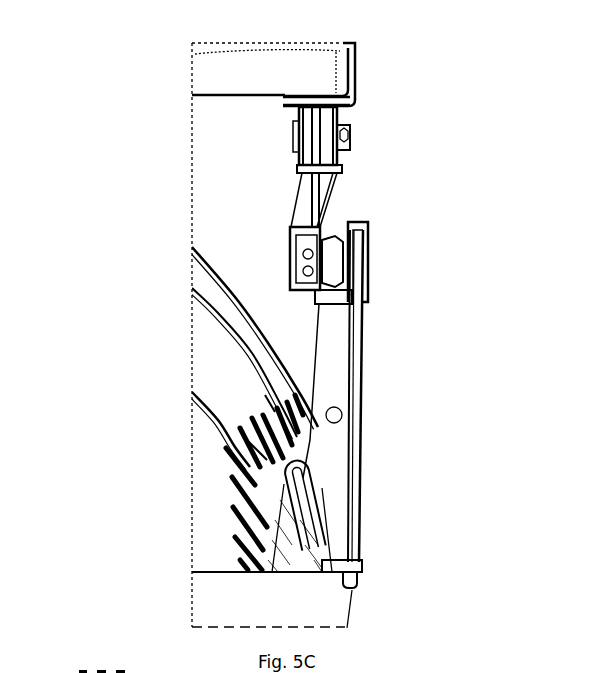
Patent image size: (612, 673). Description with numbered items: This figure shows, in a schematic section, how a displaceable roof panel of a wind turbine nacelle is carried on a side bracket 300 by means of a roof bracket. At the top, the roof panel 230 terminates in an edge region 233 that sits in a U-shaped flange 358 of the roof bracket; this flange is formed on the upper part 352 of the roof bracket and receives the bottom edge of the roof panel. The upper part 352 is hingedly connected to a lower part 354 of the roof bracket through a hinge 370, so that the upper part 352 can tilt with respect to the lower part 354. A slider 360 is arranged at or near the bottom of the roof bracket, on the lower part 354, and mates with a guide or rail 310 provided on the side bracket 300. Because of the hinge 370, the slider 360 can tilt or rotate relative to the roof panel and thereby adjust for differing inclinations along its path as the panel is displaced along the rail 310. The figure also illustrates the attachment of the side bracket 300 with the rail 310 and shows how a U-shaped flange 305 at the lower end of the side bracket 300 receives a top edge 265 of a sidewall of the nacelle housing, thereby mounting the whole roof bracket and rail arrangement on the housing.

The housing body 230 is at (213, 62).
The housing flange 233 is at (358, 75).
The U-shaped flange 358 is at (360, 88).
The hinge 370 is at (295, 140).
The upper part 352 is at (360, 117).
The lower part 354 is at (290, 245).
The slider 360 is at (345, 265).
The rail 310 is at (352, 277).
The side bracket 300 is at (345, 430).
The U-shaped flange 305 is at (305, 480).
The top edge 265 is at (358, 540).